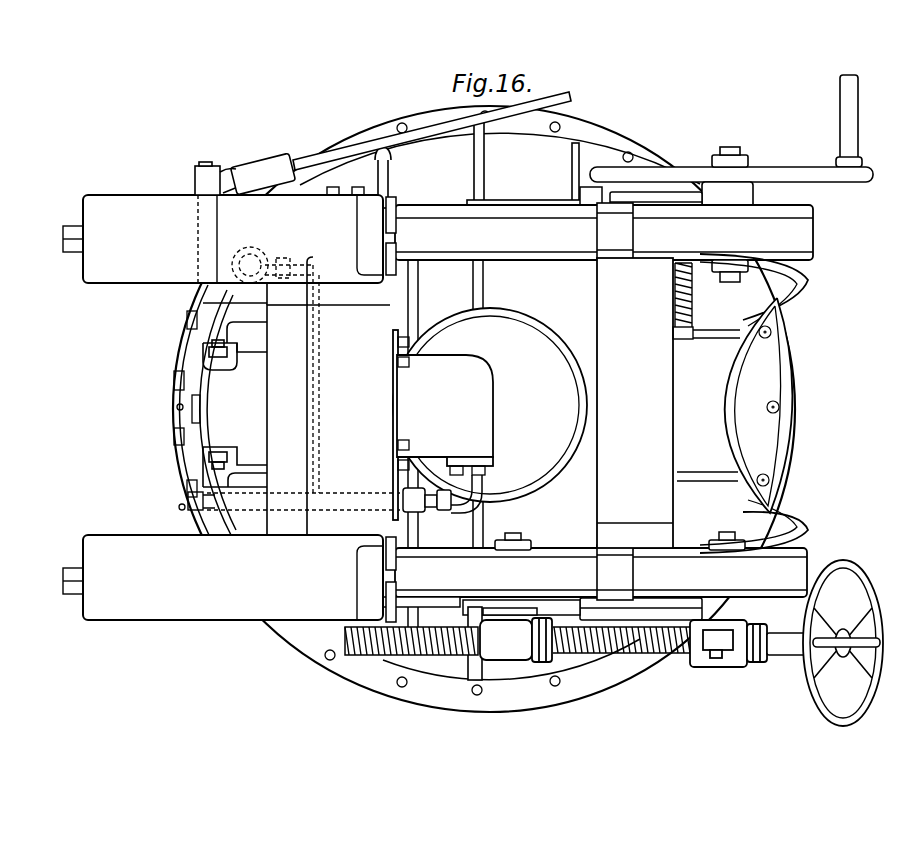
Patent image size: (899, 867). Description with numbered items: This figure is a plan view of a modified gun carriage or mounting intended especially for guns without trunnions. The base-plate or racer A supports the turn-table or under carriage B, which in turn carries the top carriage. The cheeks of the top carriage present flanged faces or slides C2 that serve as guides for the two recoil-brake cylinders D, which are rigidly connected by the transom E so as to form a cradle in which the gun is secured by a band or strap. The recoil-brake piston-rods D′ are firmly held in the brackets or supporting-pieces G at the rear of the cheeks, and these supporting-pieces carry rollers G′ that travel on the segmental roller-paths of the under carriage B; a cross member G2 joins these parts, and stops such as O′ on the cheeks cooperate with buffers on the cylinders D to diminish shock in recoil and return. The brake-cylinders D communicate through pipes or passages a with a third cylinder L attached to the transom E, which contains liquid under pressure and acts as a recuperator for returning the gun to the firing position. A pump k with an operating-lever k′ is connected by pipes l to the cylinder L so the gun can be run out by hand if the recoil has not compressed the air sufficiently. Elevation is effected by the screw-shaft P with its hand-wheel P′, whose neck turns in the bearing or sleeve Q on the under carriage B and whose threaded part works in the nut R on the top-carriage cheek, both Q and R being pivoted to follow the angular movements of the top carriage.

The base-plate or racer A is at (484, 409).
The turn-table, frame, or under carriage B is at (600, 403).
The flanged face or slide C2 is at (458, 545).
The recoil-brake cylinders D is at (223, 403).
The recoil-brake piston-rods D′ is at (475, 409).
The transom E is at (328, 396).
The brackets or supporting-pieces G is at (668, 403).
The rollers G′ is at (615, 401).
The cross bar G2 is at (448, 216).
The third cylinder L is at (365, 425).
The stop O′ is at (641, 402).
The screw-shaft P is at (788, 644).
The hand-wheel P′ is at (844, 643).
The bearing or sleeve Q is at (728, 638).
The nut R is at (517, 643).
The pipes or passages a is at (235, 395).
The pump k is at (294, 378).
The operating-lever k′ is at (383, 143).
The pipes l is at (442, 494).